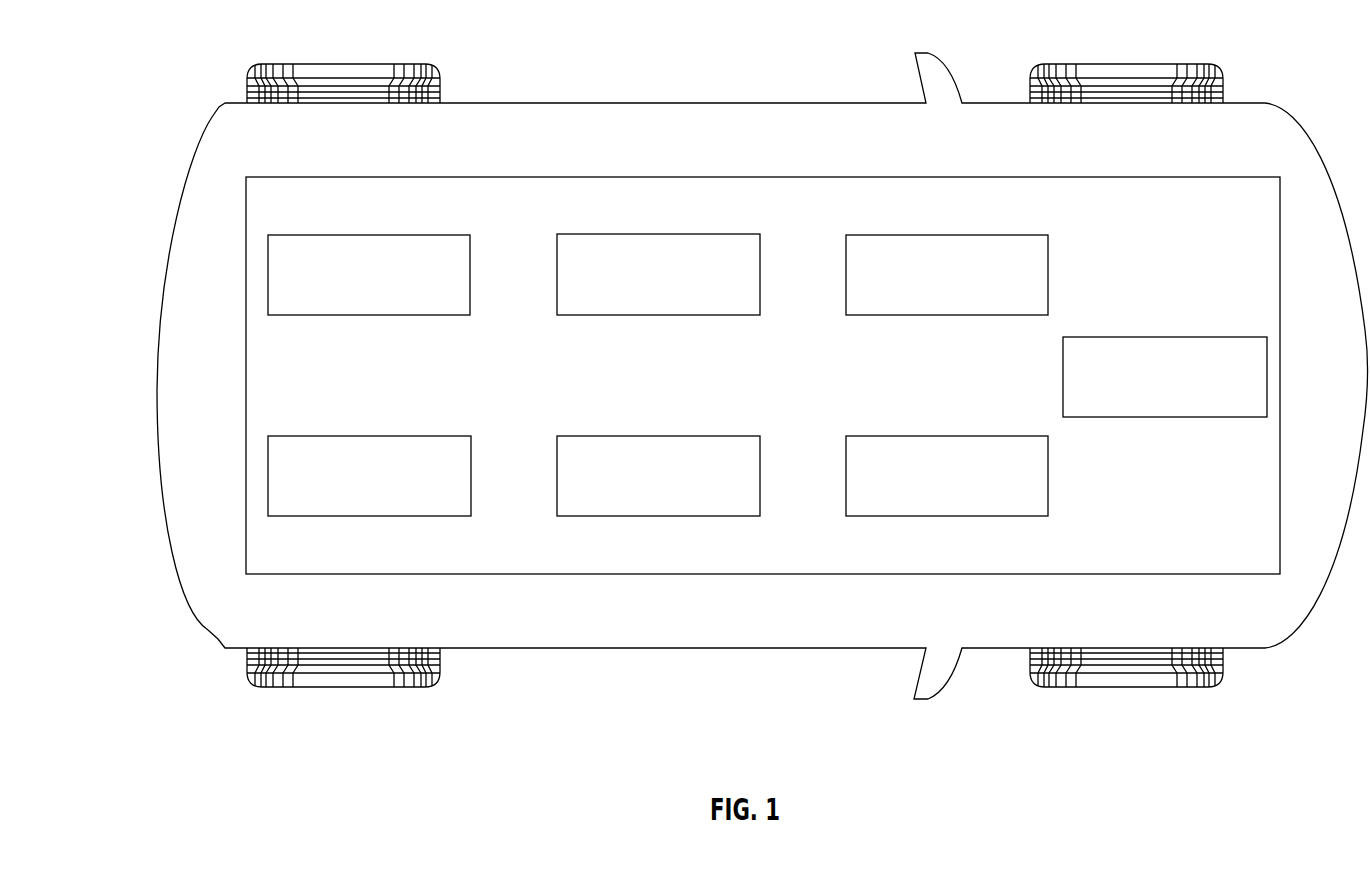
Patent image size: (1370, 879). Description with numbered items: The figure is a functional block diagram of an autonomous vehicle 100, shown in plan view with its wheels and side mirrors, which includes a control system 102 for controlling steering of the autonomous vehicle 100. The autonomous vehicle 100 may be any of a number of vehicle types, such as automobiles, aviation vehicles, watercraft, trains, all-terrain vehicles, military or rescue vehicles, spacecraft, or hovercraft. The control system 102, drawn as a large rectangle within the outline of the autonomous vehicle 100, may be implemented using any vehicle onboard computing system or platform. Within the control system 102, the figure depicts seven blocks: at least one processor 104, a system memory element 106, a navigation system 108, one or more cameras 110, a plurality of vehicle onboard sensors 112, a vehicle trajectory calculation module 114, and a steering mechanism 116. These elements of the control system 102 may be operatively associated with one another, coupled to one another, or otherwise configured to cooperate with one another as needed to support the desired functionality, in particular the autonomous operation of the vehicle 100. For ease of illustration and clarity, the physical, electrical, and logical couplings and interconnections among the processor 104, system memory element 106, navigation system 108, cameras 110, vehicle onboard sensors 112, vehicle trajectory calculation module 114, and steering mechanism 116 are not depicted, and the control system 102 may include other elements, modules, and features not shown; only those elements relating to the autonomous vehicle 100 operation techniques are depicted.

The autonomous vehicle 100 is at (668, 102).
The control system 102 is at (332, 177).
The processor 104 is at (316, 234).
The system memory element 106 is at (588, 234).
The navigation system 108 is at (860, 234).
The cameras 110 is at (315, 435).
The vehicle onboard sensors 112 is at (588, 435).
The vehicle trajectory calculation module 114 is at (860, 435).
The steering mechanism 116 is at (1137, 337).